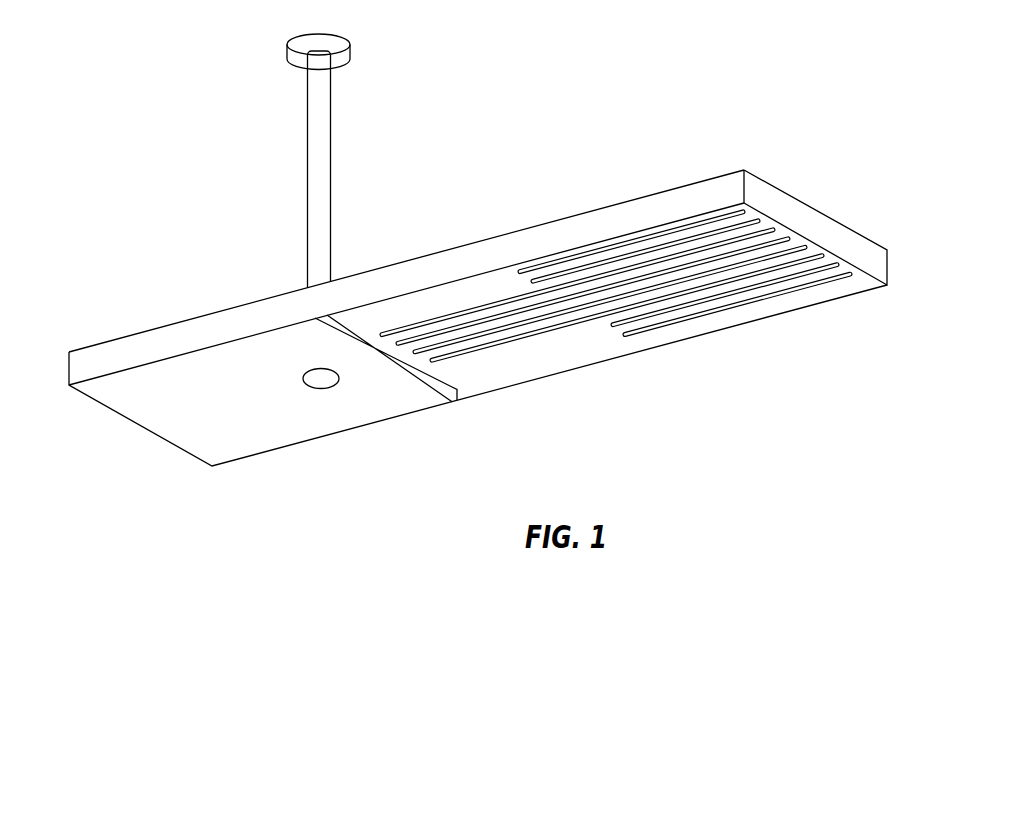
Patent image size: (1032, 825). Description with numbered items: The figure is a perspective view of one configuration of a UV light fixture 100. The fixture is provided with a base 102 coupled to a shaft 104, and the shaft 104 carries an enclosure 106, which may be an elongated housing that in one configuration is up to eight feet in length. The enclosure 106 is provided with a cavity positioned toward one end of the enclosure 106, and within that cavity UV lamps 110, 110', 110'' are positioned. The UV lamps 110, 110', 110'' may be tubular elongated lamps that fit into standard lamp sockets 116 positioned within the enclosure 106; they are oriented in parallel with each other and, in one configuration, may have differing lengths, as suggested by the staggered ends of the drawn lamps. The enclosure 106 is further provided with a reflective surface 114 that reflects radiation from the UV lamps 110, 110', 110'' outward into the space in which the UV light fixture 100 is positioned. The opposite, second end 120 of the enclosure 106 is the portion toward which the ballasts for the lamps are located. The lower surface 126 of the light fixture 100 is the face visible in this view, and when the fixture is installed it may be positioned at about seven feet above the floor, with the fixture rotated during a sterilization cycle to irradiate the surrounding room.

The UV light fixture 100 is at (800, 80).
The base 102 is at (350, 53).
The shaft 104 is at (327, 157).
The enclosure 106 is at (522, 242).
The UV lamp 110 is at (616, 288).
The UV lamp 110' is at (616, 302).
The UV lamp 110'' is at (616, 315).
The reflective surface 114 is at (527, 360).
The lamp socket 116 is at (810, 225).
The second end 120 is at (143, 432).
The lower surface 126 is at (303, 413).